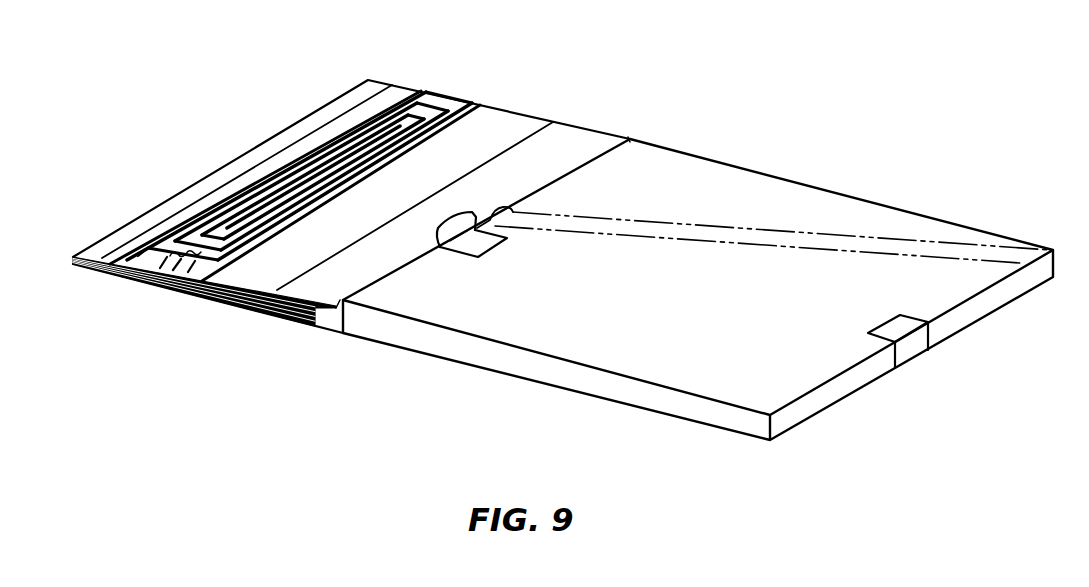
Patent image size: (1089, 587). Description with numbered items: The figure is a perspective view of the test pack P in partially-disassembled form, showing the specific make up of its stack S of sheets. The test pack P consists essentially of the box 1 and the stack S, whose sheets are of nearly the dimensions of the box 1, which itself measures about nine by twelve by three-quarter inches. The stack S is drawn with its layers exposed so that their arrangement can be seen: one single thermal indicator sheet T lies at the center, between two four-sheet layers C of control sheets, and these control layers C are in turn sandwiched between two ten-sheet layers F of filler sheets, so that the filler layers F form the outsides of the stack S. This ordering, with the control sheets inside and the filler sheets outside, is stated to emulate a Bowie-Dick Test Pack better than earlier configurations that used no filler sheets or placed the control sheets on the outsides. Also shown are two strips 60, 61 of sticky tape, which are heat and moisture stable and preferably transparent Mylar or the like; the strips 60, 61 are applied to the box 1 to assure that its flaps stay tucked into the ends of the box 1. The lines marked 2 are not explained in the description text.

The box 1 is at (646, 305).
The edge line 2 is at (781, 236).
The strip of sticky tape 60 is at (478, 253).
The strip of sticky tape 61 is at (908, 324).
The stack S is at (511, 55).
The test pack P is at (381, 413).
The layer of filler sheets F is at (356, 168).
The layer of control sheets C is at (322, 167).
The thermal indicator sheet T is at (299, 165).